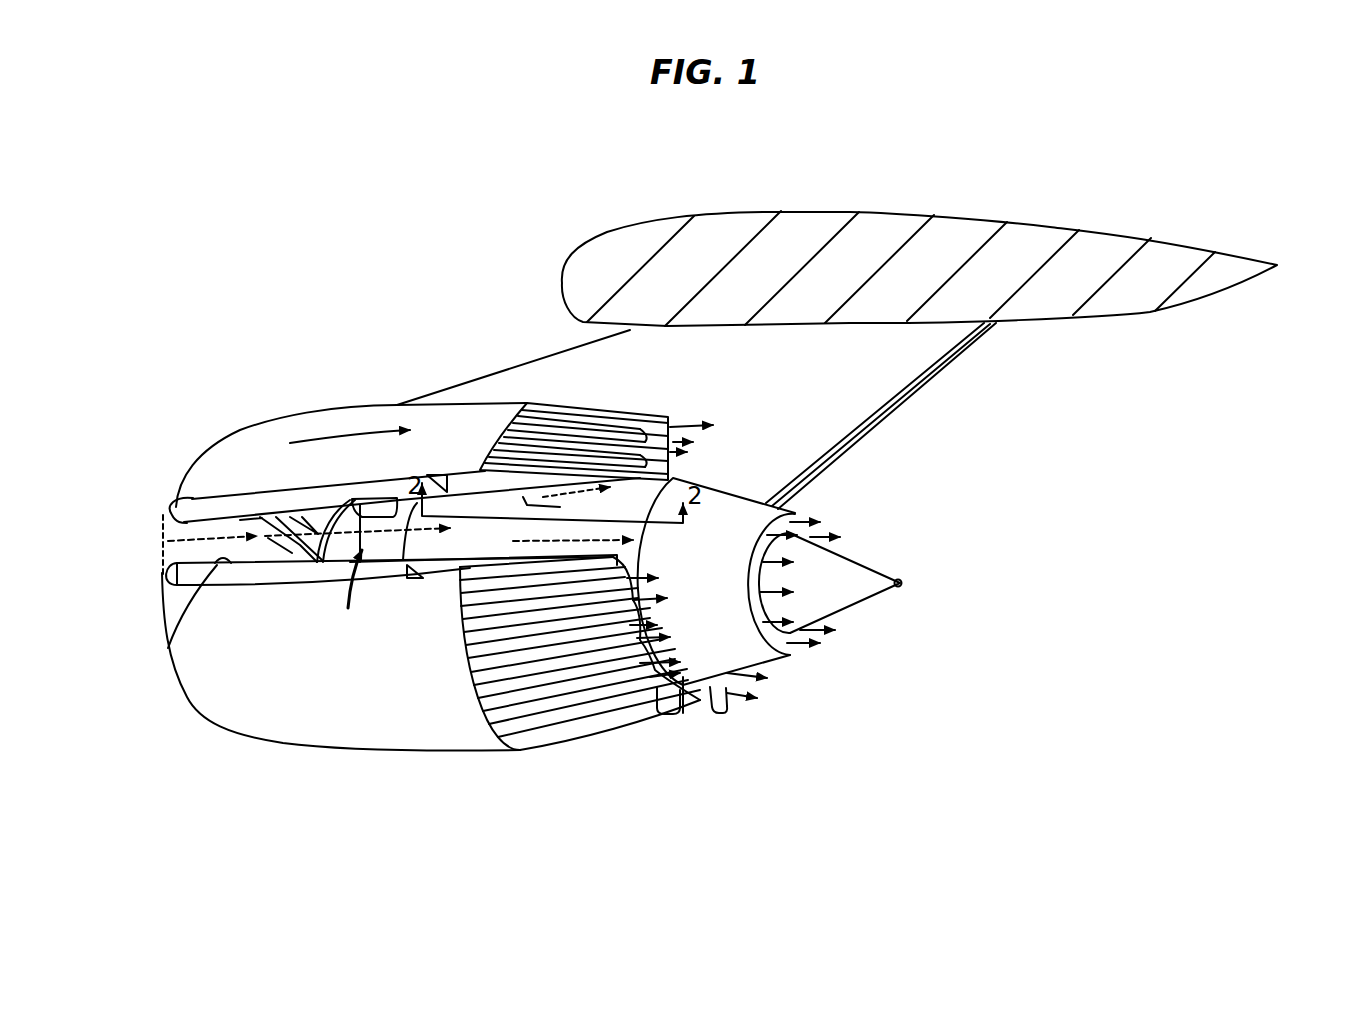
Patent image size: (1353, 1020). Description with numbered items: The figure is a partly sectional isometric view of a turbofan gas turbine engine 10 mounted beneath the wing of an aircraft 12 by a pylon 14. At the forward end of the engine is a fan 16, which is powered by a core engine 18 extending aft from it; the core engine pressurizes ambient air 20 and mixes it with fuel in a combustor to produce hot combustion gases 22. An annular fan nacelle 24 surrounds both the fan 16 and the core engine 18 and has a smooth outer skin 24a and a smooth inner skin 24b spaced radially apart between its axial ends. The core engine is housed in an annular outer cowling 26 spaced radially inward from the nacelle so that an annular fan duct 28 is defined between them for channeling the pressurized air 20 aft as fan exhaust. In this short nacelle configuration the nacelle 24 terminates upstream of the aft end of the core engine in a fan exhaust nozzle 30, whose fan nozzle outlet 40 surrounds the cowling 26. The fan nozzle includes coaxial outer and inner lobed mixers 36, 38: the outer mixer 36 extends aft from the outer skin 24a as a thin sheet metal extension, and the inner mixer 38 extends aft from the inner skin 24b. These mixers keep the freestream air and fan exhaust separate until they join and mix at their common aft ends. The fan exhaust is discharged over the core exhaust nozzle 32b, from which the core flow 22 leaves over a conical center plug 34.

The turbofan gas turbine engine 10 is at (283, 747).
The wing of an aircraft 12 is at (978, 213).
The pylon 14 is at (922, 388).
The fan 16 is at (288, 556).
The core engine 18 is at (378, 571).
The ambient air 20 is at (340, 430).
The hot combustion gases 22 is at (838, 632).
The fan nacelle 24 is at (255, 424).
The outer skin 24a is at (187, 588).
The inner skin 24b is at (168, 648).
The outer cowling 26 is at (738, 492).
The fan duct 28 is at (474, 550).
The fan exhaust nozzle 30 is at (632, 400).
The core exhaust nozzle 32b is at (789, 656).
The conical center plug 34 is at (880, 560).
The outer lobed mixer 36 is at (480, 570).
The inner lobed mixer 38 is at (566, 505).
The fan nozzle outlet 40 is at (638, 570).